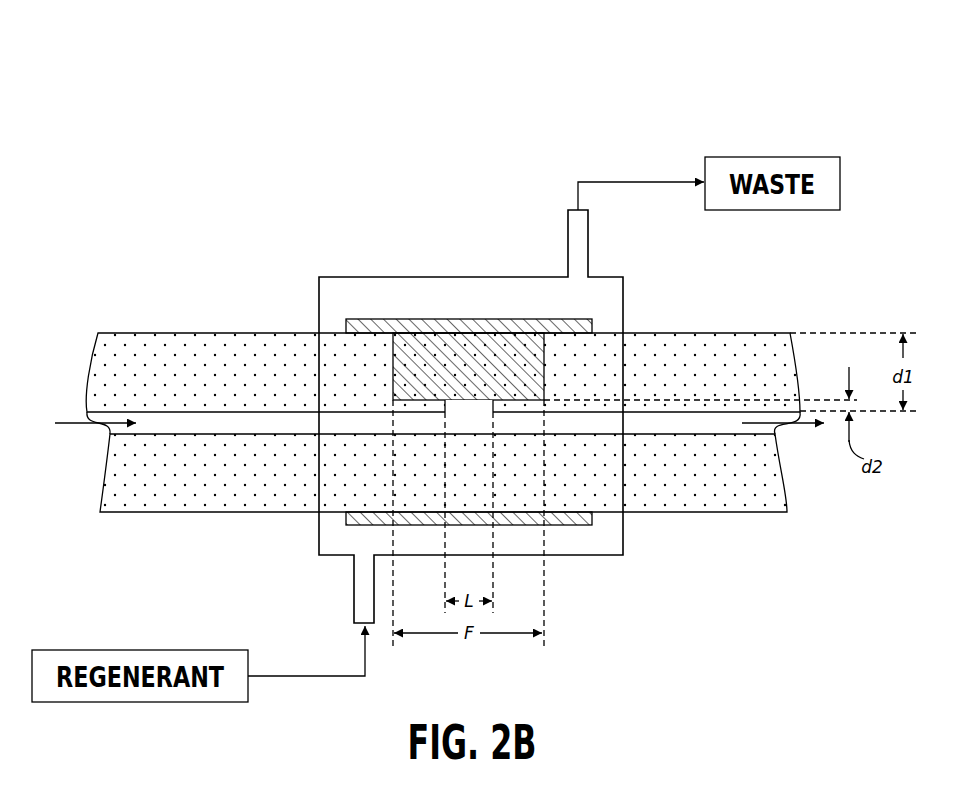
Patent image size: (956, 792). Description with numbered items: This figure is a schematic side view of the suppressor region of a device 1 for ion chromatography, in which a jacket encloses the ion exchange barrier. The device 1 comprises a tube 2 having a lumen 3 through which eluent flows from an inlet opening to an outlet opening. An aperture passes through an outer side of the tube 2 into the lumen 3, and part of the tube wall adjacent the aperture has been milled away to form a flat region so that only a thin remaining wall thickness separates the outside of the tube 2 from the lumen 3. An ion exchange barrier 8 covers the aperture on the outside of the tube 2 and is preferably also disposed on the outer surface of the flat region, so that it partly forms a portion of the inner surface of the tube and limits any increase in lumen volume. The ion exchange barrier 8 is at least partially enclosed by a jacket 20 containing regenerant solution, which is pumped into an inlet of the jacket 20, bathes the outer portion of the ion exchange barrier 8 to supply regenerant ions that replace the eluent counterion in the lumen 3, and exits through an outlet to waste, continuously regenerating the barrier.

The device 1 is at (439, 401).
The tube 2 is at (166, 332).
The lumen 3 is at (233, 434).
The ion exchange barrier 8 is at (345, 326).
The jacket 20 is at (587, 555).